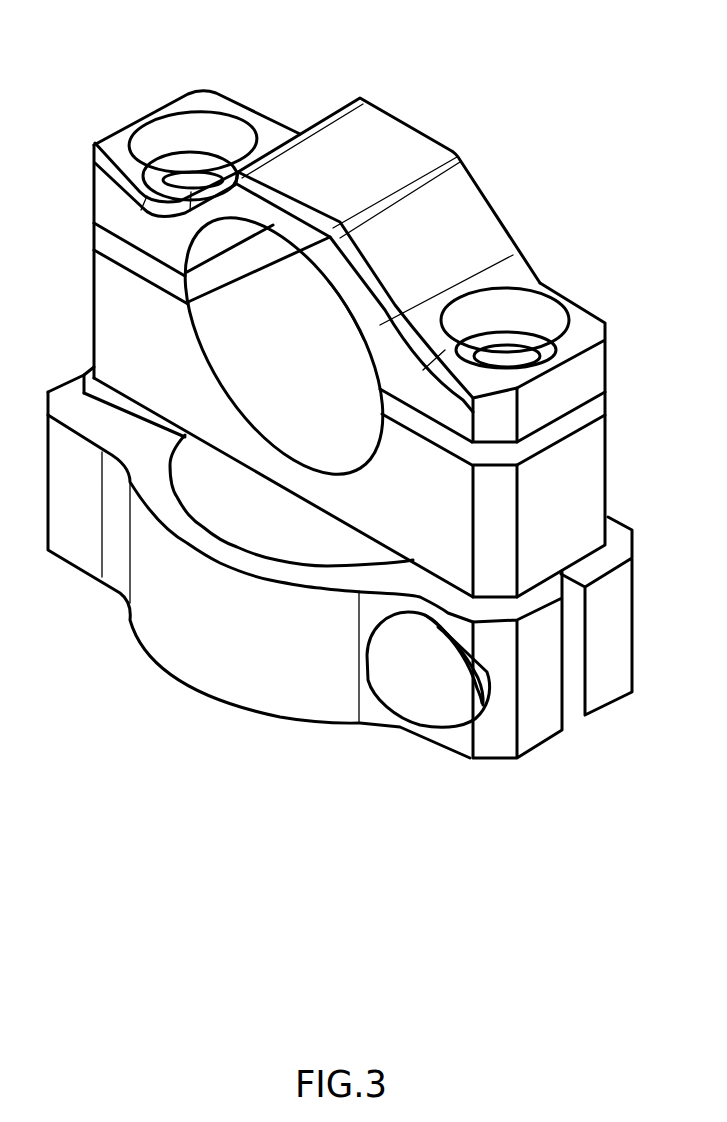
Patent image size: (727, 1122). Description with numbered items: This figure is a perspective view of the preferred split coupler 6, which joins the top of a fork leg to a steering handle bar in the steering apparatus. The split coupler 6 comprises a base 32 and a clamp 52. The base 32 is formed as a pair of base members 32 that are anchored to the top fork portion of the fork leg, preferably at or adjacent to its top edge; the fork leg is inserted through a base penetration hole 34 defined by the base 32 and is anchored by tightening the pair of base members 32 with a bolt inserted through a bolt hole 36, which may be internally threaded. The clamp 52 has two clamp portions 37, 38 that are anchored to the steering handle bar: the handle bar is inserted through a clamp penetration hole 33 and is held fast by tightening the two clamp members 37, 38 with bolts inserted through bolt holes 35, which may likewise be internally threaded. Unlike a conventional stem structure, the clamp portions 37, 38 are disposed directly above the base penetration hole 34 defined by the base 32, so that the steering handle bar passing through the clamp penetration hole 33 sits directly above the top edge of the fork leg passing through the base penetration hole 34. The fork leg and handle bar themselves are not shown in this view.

The split coupler 6 is at (354, 392).
The clamp 52 is at (354, 412).
The clamp portion 37 is at (337, 328).
The clamp portion 38 is at (468, 214).
The clamp penetration hole 33 is at (240, 345).
The bolt holes 35 is at (197, 153).
The base 32 is at (362, 570).
The base penetration hole 34 is at (272, 536).
The bolt hole 36 is at (450, 690).